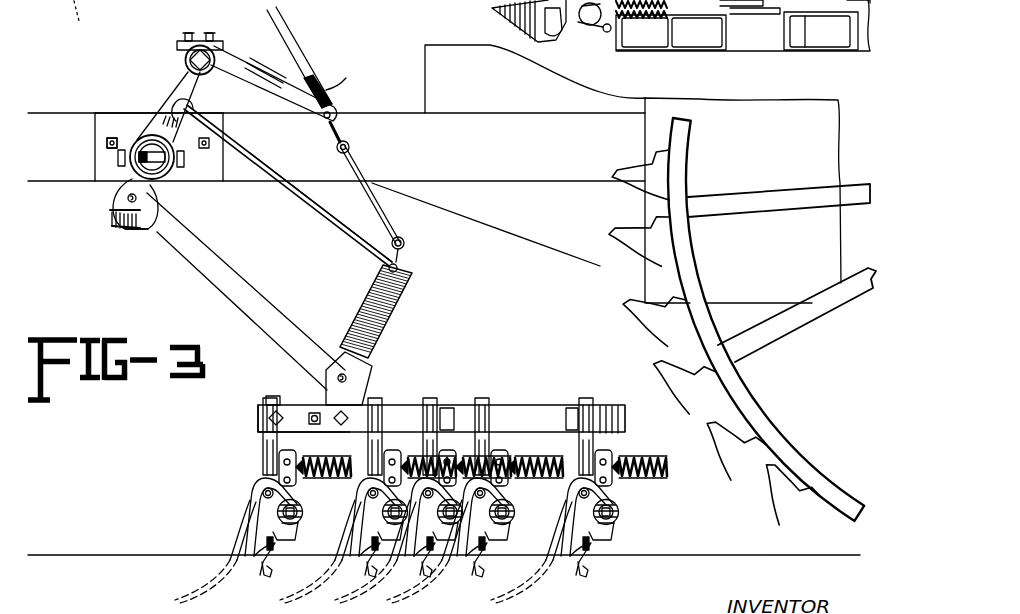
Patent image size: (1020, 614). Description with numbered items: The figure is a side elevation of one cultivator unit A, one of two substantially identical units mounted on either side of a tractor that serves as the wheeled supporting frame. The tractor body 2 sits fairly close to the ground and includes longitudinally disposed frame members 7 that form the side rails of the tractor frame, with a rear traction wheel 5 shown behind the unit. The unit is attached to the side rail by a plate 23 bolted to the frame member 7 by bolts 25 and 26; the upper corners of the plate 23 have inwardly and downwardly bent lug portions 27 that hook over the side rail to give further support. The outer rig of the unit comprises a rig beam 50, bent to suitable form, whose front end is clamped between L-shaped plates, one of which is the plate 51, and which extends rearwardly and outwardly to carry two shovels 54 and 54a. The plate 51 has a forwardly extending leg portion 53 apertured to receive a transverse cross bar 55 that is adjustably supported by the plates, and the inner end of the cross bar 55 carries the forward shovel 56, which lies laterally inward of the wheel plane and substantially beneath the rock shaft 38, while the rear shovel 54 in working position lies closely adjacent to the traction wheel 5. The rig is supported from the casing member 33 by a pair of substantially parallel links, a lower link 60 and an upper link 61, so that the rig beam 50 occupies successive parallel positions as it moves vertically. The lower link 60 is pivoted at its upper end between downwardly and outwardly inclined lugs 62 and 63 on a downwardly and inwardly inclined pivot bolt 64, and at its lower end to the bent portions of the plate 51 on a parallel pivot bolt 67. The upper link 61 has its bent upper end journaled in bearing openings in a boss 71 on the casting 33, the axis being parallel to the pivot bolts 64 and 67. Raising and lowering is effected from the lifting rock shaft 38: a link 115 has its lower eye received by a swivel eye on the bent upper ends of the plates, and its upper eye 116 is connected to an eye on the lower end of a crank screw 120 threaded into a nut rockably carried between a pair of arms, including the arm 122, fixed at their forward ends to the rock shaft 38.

The body portion 2 is at (595, 273).
The rear traction wheels 5 is at (734, 379).
The frame members 7 is at (484, 132).
The plate 23 is at (207, 167).
The bolt 25 is at (112, 137).
The bolt 26 is at (220, 130).
The lug portions 27 is at (105, 106).
The casing member 33 is at (149, 135).
The rock shaft 38 is at (228, 36).
The beam 50 is at (508, 416).
The L-shaped plate 51 is at (346, 391).
The leg portions 53 is at (297, 411).
The shovel 54 is at (586, 402).
The shovel 54a is at (431, 404).
The cross bar 55 is at (270, 418).
The forward shovel 56 is at (257, 476).
The lower parallel link 60 is at (192, 243).
The upper parallel link 61 is at (336, 228).
The lug 62 is at (112, 210).
The lug 63 is at (125, 236).
The pivot bolt 64 is at (134, 229).
The pivot bolt 67 is at (337, 354).
The boss 71 is at (141, 133).
The link 115 is at (373, 201).
The eye 116 is at (349, 147).
The crank screw 120 is at (298, 58).
The arm 122 is at (230, 57).
The cultivator unit A is at (346, 78).